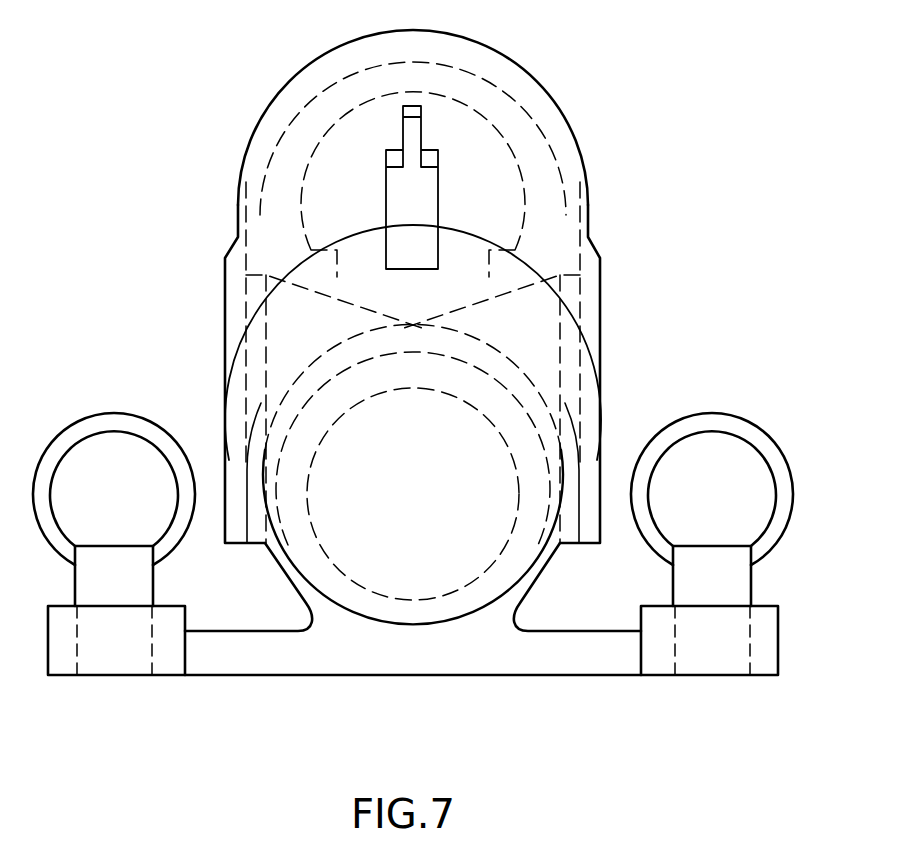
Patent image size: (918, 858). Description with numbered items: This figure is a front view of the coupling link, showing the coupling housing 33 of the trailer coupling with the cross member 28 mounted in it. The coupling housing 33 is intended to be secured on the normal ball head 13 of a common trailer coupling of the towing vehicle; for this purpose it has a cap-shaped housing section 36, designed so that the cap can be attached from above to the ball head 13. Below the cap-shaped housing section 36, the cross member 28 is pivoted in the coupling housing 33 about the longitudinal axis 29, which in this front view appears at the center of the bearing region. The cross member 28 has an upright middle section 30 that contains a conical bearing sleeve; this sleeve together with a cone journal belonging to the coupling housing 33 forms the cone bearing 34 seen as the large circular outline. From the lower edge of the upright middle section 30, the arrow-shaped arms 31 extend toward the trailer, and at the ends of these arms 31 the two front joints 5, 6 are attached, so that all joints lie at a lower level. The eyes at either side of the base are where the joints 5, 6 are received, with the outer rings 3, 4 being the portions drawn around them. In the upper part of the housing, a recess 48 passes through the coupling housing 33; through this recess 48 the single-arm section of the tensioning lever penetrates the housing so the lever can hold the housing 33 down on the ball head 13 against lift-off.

The right eye ring 3 is at (756, 440).
The left eye ring 4 is at (74, 412).
The front joint 5 is at (718, 447).
The front joint 6 is at (120, 447).
The ball head 13 is at (530, 171).
The cross member 28 is at (399, 692).
The longitudinal axis 29 is at (413, 492).
The upright middle section 30 is at (305, 550).
The arrow-shaped arms 31 is at (212, 668).
The coupling housing 33 is at (201, 200).
The cone bearing 34 is at (512, 372).
The cap-shaped housing section 36 is at (527, 78).
The recess 48 is at (420, 192).